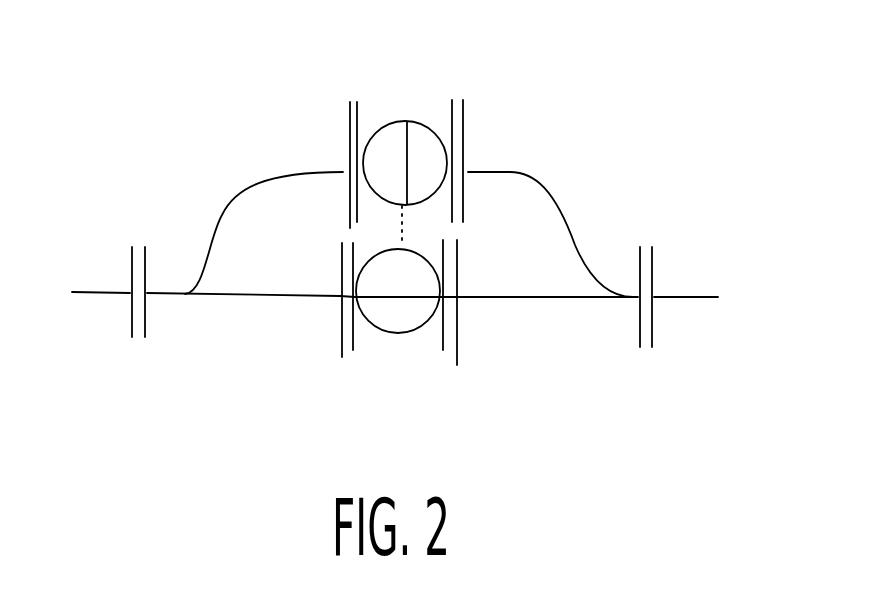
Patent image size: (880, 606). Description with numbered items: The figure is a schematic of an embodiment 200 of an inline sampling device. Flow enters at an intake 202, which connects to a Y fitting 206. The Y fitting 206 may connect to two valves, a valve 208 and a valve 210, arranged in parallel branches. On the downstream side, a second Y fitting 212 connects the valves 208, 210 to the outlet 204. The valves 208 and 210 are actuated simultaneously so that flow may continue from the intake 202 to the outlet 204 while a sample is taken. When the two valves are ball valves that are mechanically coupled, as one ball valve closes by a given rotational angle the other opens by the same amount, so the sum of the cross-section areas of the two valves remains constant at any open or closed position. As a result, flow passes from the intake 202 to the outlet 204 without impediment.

The embodiment 200 is at (646, 452).
The intake 202 is at (86, 291).
The outlet 204 is at (740, 297).
The Y fitting 206 is at (227, 307).
The valve 208 is at (383, 350).
The valve 210 is at (383, 121).
The second Y fitting 212 is at (538, 176).